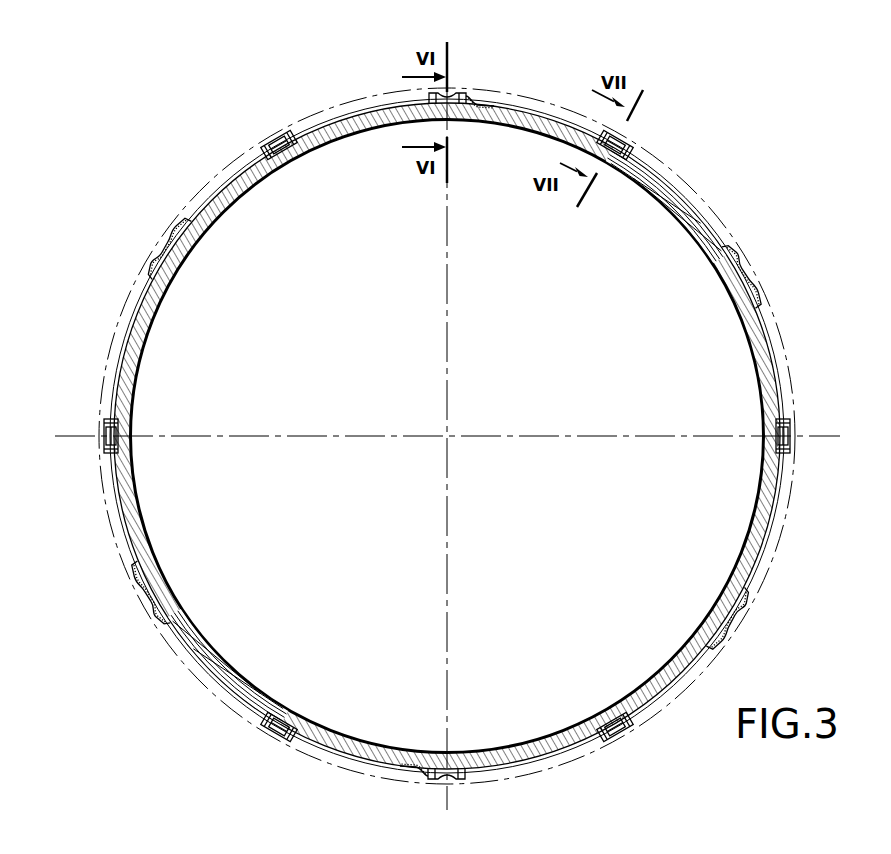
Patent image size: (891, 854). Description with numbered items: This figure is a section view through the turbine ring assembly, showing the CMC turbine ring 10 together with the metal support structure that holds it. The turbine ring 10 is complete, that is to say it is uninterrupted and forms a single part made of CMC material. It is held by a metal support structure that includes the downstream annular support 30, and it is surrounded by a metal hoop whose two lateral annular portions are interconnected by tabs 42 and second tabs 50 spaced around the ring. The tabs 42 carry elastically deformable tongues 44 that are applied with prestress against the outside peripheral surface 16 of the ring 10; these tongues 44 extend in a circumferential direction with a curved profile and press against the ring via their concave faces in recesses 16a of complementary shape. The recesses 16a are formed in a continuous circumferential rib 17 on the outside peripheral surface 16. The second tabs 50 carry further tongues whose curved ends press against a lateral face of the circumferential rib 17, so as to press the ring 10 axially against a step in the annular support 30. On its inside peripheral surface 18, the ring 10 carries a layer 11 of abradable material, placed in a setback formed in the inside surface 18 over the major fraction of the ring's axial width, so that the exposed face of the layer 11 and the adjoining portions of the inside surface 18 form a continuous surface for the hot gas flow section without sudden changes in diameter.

The turbine ring 10 is at (192, 632).
The layer of abradable material 11 is at (385, 735).
The outside peripheral surface 16 is at (658, 178).
The recesses 16a is at (190, 234).
The circumferential rib 17 is at (122, 503).
The inside peripheral surface 18 is at (132, 398).
The downstream annular support 30 is at (788, 357).
The tabs 42 is at (456, 93).
The elastically deformable tongues 44 is at (492, 106).
The second tabs 50 is at (278, 138).